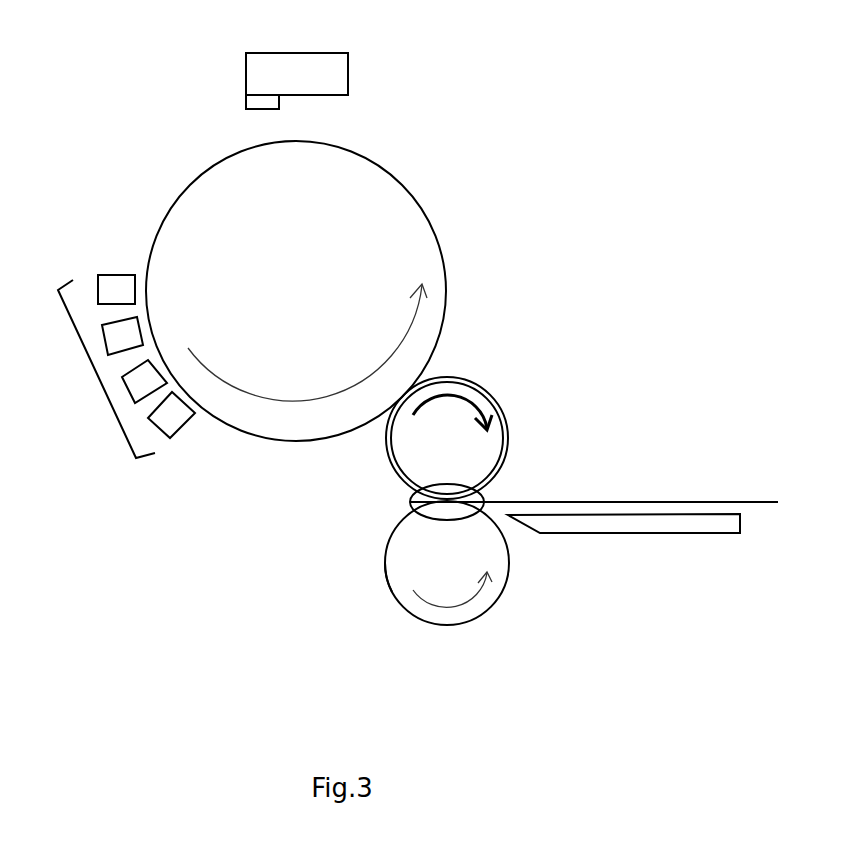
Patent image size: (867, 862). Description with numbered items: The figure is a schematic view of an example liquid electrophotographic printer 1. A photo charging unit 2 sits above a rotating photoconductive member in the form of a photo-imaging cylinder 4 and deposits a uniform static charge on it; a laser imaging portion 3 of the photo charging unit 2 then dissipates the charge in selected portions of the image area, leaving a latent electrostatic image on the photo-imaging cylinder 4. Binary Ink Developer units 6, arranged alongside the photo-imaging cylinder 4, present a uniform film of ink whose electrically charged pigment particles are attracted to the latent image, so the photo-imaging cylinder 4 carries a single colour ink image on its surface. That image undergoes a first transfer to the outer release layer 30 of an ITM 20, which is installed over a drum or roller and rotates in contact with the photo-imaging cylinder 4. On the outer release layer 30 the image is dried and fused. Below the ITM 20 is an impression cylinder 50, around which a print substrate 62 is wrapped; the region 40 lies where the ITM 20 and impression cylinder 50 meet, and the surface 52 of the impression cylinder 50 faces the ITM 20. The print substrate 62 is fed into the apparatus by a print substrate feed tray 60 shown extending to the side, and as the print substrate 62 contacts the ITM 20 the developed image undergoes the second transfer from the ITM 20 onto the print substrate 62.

The liquid electrophotographic printer 1 is at (110, 136).
The photo charging unit 2 is at (303, 53).
The laser imaging portion 3 is at (245, 100).
The photo-imaging cylinder 4 is at (313, 305).
The Binary Ink Developer units 6 is at (123, 366).
The ITM 20 is at (425, 457).
The outer release layer 30 is at (485, 388).
The transfer nip 40 is at (410, 502).
The impression cylinder 50 is at (425, 582).
The impression cylinder surface 52 is at (392, 592).
The print substrate feed tray 60 is at (603, 533).
The print substrate 62 is at (677, 500).